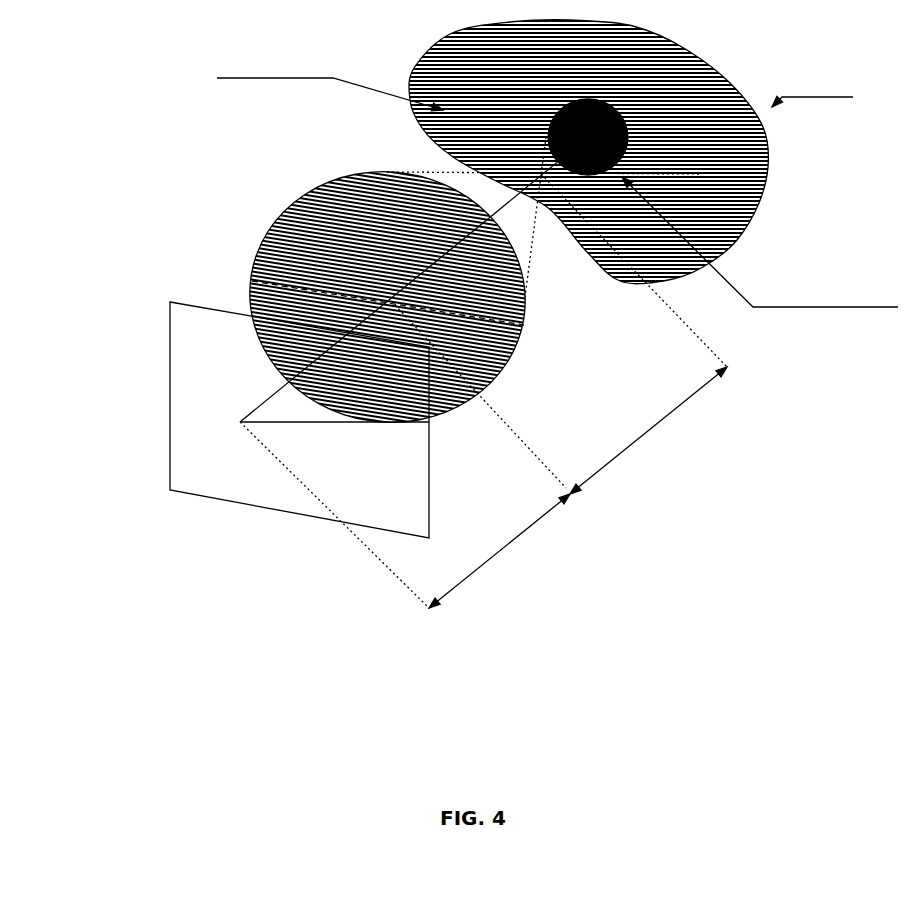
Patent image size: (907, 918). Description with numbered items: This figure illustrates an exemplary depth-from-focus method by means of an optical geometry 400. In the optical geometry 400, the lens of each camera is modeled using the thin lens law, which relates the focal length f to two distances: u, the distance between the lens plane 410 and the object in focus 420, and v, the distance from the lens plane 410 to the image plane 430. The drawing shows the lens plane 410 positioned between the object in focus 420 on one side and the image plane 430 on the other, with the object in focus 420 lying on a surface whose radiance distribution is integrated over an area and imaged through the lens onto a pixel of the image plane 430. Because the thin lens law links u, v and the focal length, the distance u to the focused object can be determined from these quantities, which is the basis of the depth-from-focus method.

The optical geometry 400 is at (510, 365).
The lens plane 410 is at (436, 312).
The object in focus 420 is at (557, 193).
The image plane 430 is at (276, 455).